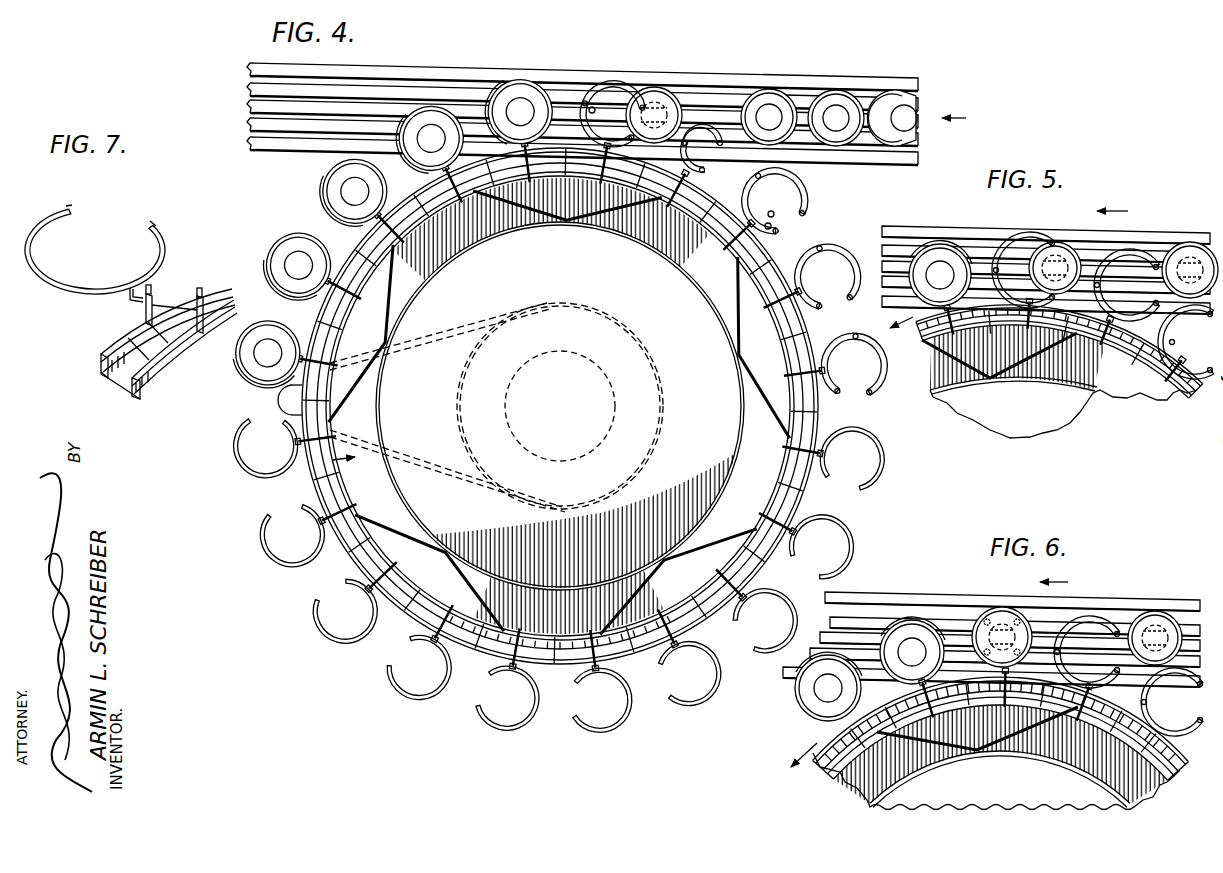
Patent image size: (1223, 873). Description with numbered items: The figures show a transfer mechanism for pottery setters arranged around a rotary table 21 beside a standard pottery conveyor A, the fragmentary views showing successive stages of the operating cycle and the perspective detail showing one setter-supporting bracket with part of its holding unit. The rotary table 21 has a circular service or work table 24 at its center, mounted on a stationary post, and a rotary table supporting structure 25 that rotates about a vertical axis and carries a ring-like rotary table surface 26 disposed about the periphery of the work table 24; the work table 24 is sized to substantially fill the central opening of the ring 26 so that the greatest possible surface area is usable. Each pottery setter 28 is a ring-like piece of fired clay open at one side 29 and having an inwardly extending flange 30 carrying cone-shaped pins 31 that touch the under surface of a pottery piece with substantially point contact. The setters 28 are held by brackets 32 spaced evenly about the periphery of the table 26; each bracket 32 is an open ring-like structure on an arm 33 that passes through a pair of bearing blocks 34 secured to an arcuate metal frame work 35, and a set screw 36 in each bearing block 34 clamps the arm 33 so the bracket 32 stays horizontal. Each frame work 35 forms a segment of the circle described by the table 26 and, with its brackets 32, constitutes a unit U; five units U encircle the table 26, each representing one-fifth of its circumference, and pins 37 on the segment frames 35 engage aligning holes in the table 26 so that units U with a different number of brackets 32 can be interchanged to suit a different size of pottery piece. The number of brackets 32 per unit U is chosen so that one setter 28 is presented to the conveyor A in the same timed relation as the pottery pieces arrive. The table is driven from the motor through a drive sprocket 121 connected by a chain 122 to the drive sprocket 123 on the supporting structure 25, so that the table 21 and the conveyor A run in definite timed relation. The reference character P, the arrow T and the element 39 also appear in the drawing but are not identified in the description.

In FIG. 4, the rotary table 21 is at (315, 462).
In FIG. 4, the service or work table 24 is at (714, 476).
In FIG. 5, the service or work table 24 is at (1062, 422).
In FIG. 6, the service or work table 24 is at (1029, 798).
In FIG. 4, the rotary table supporting structure 25 is at (610, 389).
In FIG. 4, the ring-like rotary table surface 26 is at (768, 502).
In FIG. 5, the ring-like rotary table surface 26 is at (1135, 388).
In FIG. 6, the ring-like rotary table surface 26 is at (863, 785).
In FIG. 4, the pottery setter 28 is at (619, 92).
In FIG. 5, the pottery setter 28 is at (940, 246).
In FIG. 6, the pottery setter 28 is at (1088, 622).
In FIG. 4, the open side of setter 29 is at (790, 213).
In FIG. 4, the inwardly extending flange 30 is at (790, 183).
In FIG. 4, the cone-shaped pins 31 is at (606, 97).
In FIG. 4, the bracket 32 is at (233, 452).
In FIG. 7, the bracket 32 is at (163, 243).
In FIG. 7, the arm 33 is at (128, 294).
In FIG. 4, the bearing blocks 34 is at (387, 571).
In FIG. 5, the bearing blocks 34 is at (1065, 340).
In FIG. 6, the bearing blocks 34 is at (1003, 710).
In FIG. 7, the bearing blocks 34 is at (152, 299).
In FIG. 4, the arcuate metal frame work 35 is at (688, 232).
In FIG. 7, the arcuate metal frame work 35 is at (114, 373).
In FIG. 7, the set screws 36 is at (150, 288).
In FIG. 4, the pins 37 is at (382, 346).
In FIG. 5, the pins 37 is at (999, 355).
In FIG. 6, the pins 37 is at (977, 728).
In FIG. 6, the package roll 39 is at (1160, 627).
In FIG. 4, the drive sprocket 121 is at (292, 403).
In FIG. 4, the chain 122 is at (438, 341).
In FIG. 4, the drive sprocket 123 is at (473, 383).
In FIG. 4, the conveyor A is at (713, 79).
In FIG. 5, the conveyor A is at (1140, 238).
In FIG. 6, the conveyor A is at (905, 590).
In FIG. 4, the package P is at (657, 90).
In FIG. 5, the package P is at (1060, 250).
In FIG. 6, the package P is at (1001, 617).
In FIG. 4, the direction of travel T is at (312, 584).
In FIG. 4, the unit U is at (391, 290).